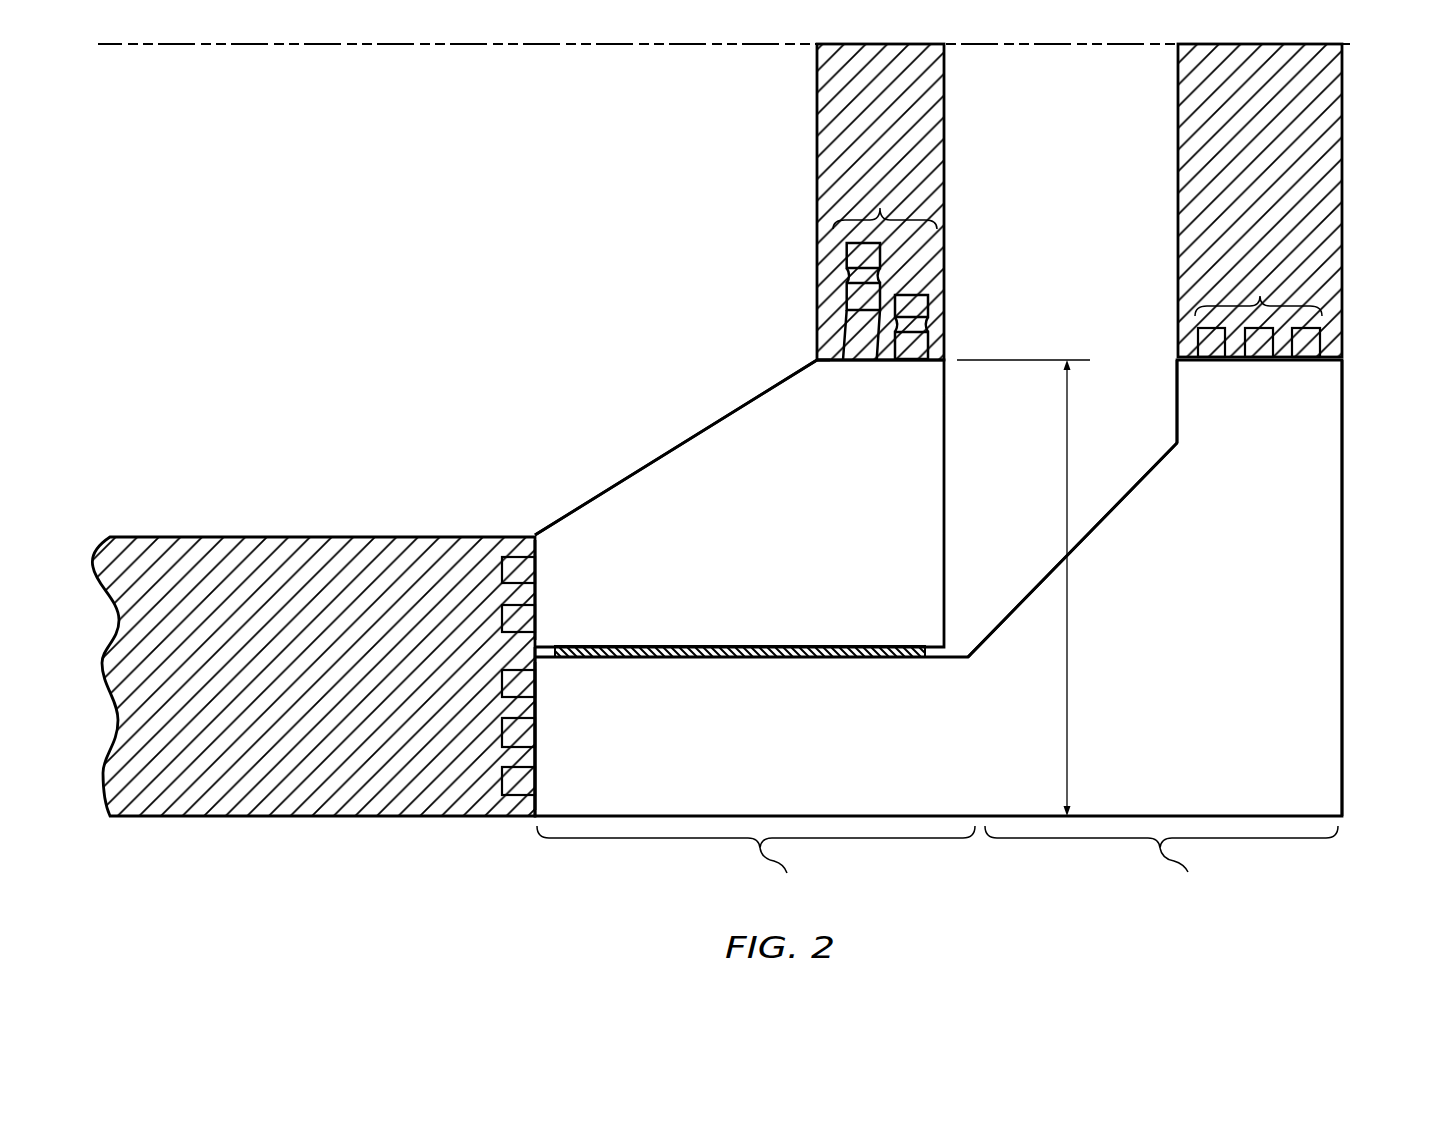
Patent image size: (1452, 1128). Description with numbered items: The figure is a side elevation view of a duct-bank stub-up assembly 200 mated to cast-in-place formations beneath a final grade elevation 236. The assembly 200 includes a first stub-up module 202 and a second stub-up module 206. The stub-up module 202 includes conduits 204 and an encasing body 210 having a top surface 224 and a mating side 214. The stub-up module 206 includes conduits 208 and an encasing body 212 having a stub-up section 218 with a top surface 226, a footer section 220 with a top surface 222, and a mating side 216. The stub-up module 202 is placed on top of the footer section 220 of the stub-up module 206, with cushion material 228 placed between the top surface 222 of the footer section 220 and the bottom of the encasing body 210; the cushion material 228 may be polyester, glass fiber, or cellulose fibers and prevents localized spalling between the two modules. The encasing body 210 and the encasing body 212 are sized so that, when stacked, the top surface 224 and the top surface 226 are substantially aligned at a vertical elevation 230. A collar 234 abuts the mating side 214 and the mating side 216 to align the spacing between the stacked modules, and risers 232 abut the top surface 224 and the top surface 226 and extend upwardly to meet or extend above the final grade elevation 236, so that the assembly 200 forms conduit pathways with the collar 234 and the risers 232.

The duct-bank stub-up assembly 200 is at (720, 228).
The stub-up module 202 is at (836, 485).
The conduits 204 is at (880, 207).
The stub-up module 206 is at (1268, 505).
The conduits 208 is at (1260, 296).
The encasing body 210 is at (710, 417).
The encasing body 212 is at (1350, 580).
The mating side 214 is at (556, 576).
The mating side 216 is at (558, 712).
The stub-up section 218 is at (1161, 862).
The footer section 220 is at (756, 863).
The top surface 222 is at (965, 631).
The top surface 224 is at (817, 350).
The top surface 226 is at (1336, 328).
The cushion material 228 is at (627, 642).
The vertical elevation 230 is at (1068, 618).
The risers 232 is at (960, 88).
The collar 234 is at (215, 526).
The final grade elevation 236 is at (456, 54).